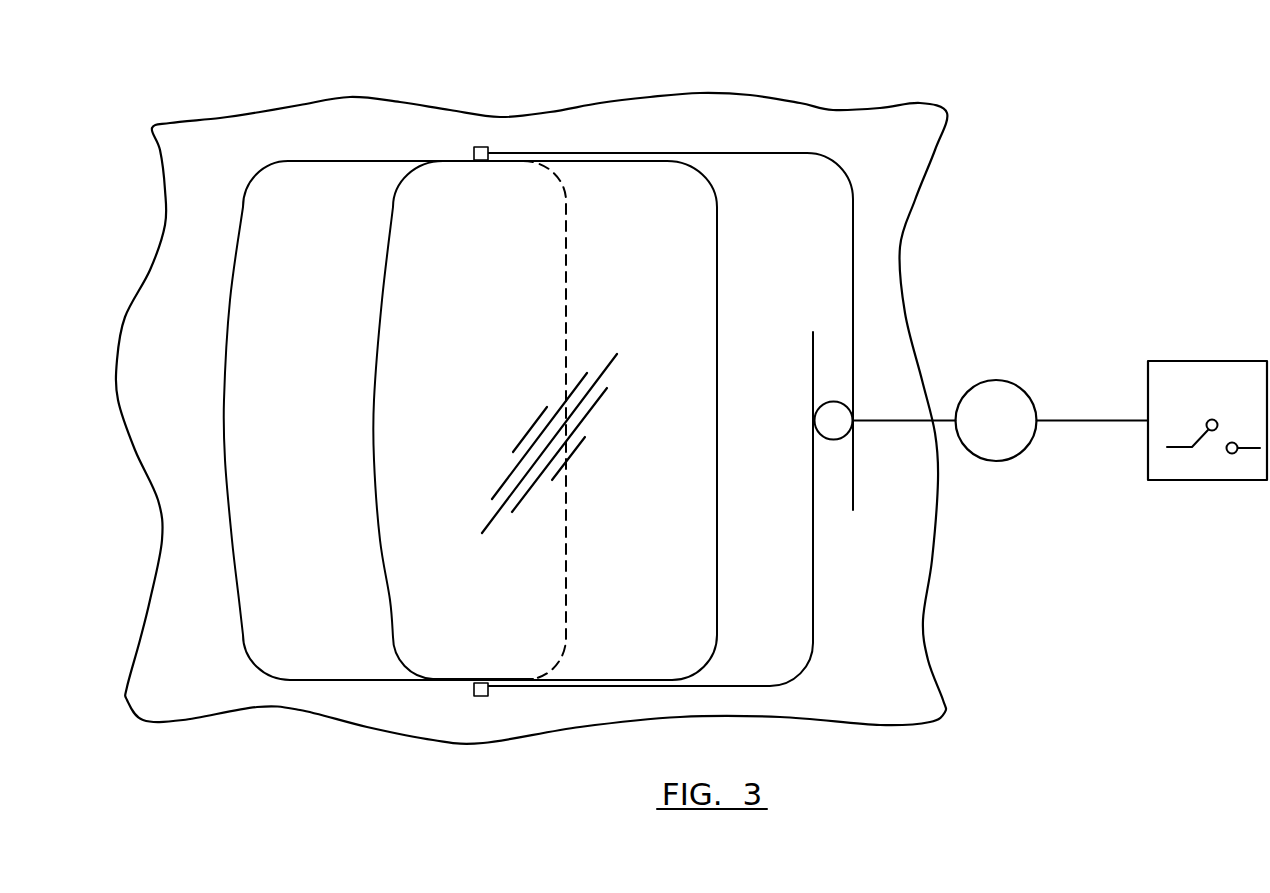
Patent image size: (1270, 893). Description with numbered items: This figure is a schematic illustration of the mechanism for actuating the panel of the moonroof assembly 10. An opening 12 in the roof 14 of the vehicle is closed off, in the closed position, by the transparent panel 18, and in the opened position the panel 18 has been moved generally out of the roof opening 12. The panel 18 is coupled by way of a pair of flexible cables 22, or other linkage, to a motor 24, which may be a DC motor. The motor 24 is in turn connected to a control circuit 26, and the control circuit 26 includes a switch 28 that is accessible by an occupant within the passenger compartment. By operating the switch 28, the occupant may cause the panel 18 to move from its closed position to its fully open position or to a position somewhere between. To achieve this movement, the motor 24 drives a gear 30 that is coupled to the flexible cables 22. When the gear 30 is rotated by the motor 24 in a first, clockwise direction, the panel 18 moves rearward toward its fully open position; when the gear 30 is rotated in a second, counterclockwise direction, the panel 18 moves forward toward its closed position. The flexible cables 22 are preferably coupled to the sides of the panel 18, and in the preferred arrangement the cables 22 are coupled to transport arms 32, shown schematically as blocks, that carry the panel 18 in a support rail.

The moonroof assembly 10 is at (188, 91).
The opening 12 is at (240, 603).
The roof 14 is at (190, 542).
The transparent panel 18 is at (498, 200).
The flexible cables 22 is at (698, 152).
The motor 24 is at (998, 380).
The control circuit 26 is at (1182, 382).
The switch 28 is at (1177, 448).
The gear 30 is at (833, 440).
The transport arms 32 is at (479, 147).